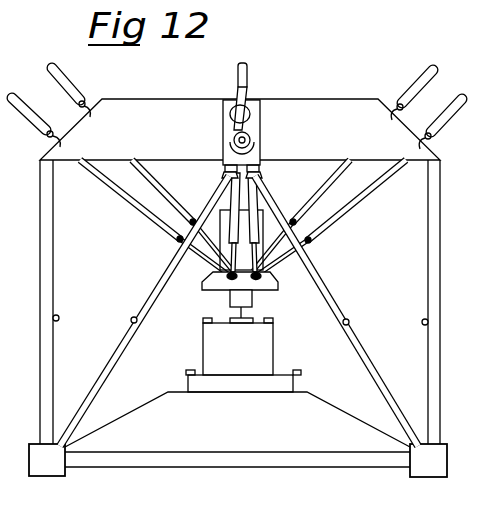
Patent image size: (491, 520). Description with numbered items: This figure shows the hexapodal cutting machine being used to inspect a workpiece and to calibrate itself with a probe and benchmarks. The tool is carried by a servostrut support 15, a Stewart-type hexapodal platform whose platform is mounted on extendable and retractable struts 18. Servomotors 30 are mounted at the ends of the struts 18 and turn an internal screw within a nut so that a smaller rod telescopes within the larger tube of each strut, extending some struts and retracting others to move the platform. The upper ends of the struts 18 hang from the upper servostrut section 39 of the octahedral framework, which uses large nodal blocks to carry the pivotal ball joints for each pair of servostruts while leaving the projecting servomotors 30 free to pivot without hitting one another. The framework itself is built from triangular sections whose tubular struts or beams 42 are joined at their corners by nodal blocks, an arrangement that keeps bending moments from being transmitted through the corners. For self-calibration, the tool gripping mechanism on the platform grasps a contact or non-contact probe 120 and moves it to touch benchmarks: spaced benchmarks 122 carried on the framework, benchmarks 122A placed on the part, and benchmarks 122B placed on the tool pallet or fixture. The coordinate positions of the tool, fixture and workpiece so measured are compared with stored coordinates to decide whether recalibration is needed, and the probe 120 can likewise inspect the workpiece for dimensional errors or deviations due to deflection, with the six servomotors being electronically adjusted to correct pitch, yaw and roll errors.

The servostrut support 15 is at (264, 147).
The struts 18 is at (347, 209).
The servomotors 30 is at (438, 78).
The upper servostrut section 39 is at (320, 98).
The struts or beams 42 is at (324, 282).
The probe 120 is at (250, 320).
The benchmarks 122 is at (59, 317).
The benchmarks 122A is at (205, 322).
The benchmarks 122B is at (188, 372).